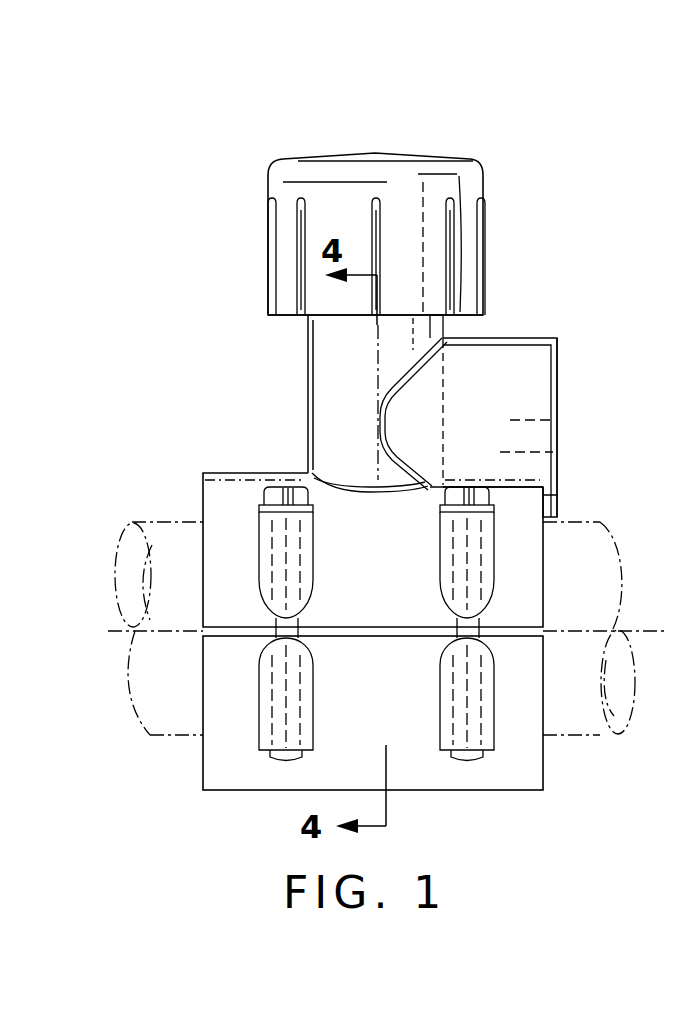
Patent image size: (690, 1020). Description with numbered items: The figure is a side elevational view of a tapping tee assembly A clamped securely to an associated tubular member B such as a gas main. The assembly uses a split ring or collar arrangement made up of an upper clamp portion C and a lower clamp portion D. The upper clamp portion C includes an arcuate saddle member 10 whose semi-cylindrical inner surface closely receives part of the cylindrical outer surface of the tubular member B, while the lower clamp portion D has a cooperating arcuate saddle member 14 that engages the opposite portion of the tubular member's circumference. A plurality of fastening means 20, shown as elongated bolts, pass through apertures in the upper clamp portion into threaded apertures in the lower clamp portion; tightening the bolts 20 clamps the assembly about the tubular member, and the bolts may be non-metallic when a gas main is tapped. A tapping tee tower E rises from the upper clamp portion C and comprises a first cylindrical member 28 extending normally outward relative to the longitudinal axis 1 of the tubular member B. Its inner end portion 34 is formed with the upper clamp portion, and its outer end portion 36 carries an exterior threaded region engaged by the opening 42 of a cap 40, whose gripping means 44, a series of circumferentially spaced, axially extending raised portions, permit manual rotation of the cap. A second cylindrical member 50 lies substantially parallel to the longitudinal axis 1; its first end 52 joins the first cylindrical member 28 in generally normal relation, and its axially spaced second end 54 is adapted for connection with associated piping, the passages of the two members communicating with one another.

The longitudinal axis 1 is at (645, 629).
The arcuate saddle member 10 is at (518, 579).
The arcuate saddle member 14 is at (520, 680).
The fastening means 20 is at (287, 488).
The first cylindrical member 28 is at (326, 381).
The inner end portion 34 is at (356, 466).
The outer end portion 36 is at (336, 322).
The cap 40 is at (462, 185).
The opening 42 is at (453, 318).
The gripping means 44 is at (268, 251).
The second cylindrical member 50 is at (535, 348).
The first end 52 is at (418, 459).
The second end 54 is at (530, 400).
The tapping tee assembly A is at (190, 794).
The tubular member B is at (166, 520).
The upper clamp portion C is at (197, 478).
The lower clamp portion D is at (530, 796).
The tapping tee tower E is at (212, 369).